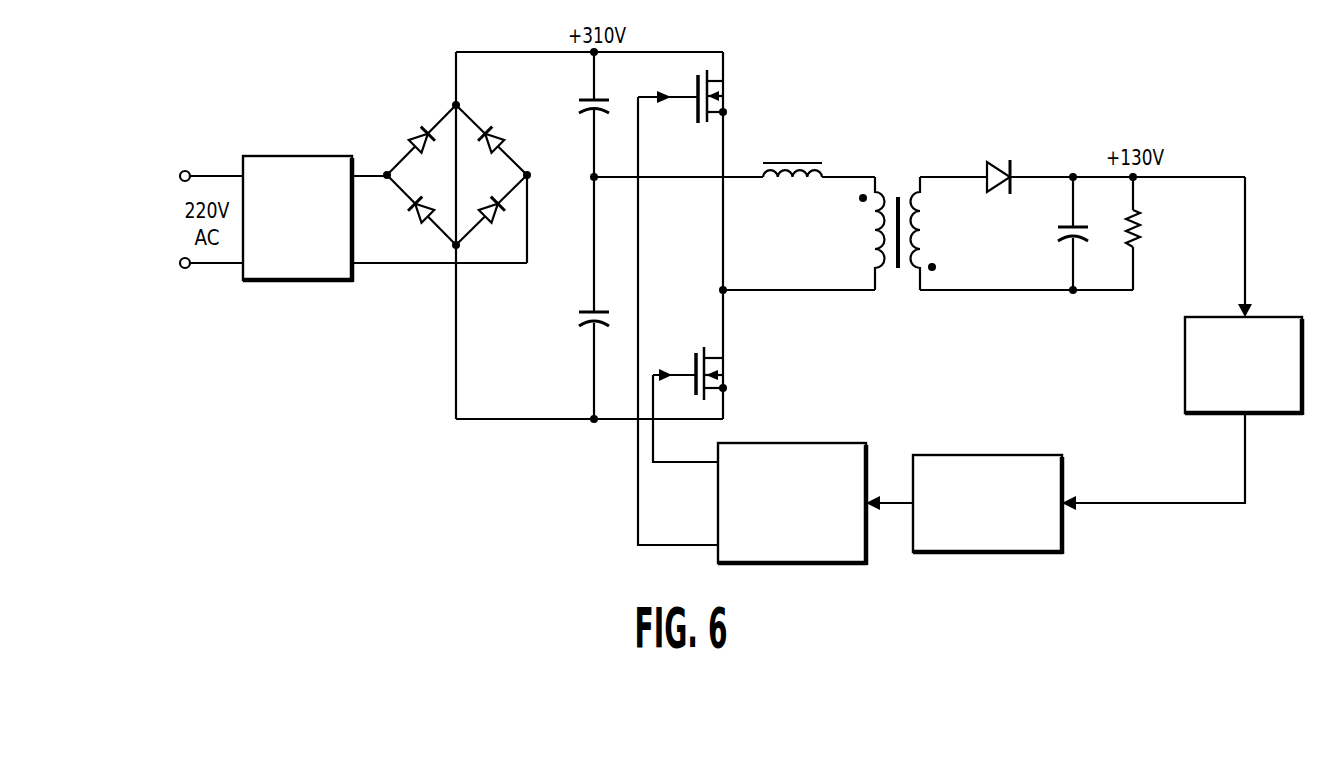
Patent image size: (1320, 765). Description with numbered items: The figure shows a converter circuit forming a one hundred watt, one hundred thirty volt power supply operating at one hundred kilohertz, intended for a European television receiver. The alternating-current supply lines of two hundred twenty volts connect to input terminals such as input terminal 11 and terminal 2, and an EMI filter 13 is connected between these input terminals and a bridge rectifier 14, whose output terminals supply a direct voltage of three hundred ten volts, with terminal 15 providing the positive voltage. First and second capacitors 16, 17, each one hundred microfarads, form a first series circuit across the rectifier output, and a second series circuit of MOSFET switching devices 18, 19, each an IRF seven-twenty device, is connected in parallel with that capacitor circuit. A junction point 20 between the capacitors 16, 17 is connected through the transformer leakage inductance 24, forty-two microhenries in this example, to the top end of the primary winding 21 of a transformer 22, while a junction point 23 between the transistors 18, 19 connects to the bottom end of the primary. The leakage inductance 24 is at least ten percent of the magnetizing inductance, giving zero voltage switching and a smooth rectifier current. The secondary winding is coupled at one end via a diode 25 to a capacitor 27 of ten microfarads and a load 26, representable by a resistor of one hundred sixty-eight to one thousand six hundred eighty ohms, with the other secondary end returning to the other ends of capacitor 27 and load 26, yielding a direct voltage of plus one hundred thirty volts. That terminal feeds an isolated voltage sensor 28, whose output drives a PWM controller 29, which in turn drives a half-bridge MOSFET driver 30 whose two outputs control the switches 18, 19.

The input terminal 11 is at (184, 170).
The second AC input terminal 2 is at (184, 269).
The EMI filter 13 is at (299, 156).
The bridge rectifier 14 is at (457, 262).
The terminal 15 is at (454, 106).
The first capacitor 16 is at (590, 99).
The second capacitor 17 is at (590, 311).
The MOSFET switching device 18 is at (697, 124).
The MOSFET switching device 19 is at (697, 352).
The junction point 20 is at (593, 178).
The primary winding 21 is at (880, 250).
The transformer 22 is at (898, 196).
The junction point 23 is at (720, 290).
The leakage inductance 24 is at (782, 185).
The diode 25 is at (994, 162).
The load 26 is at (1135, 243).
The capacitor 27 is at (1058, 226).
The isolated voltage sensor 28 is at (1200, 414).
The PWM controller 29 is at (1018, 455).
The half-bridge MOSFET driver 30 is at (832, 443).